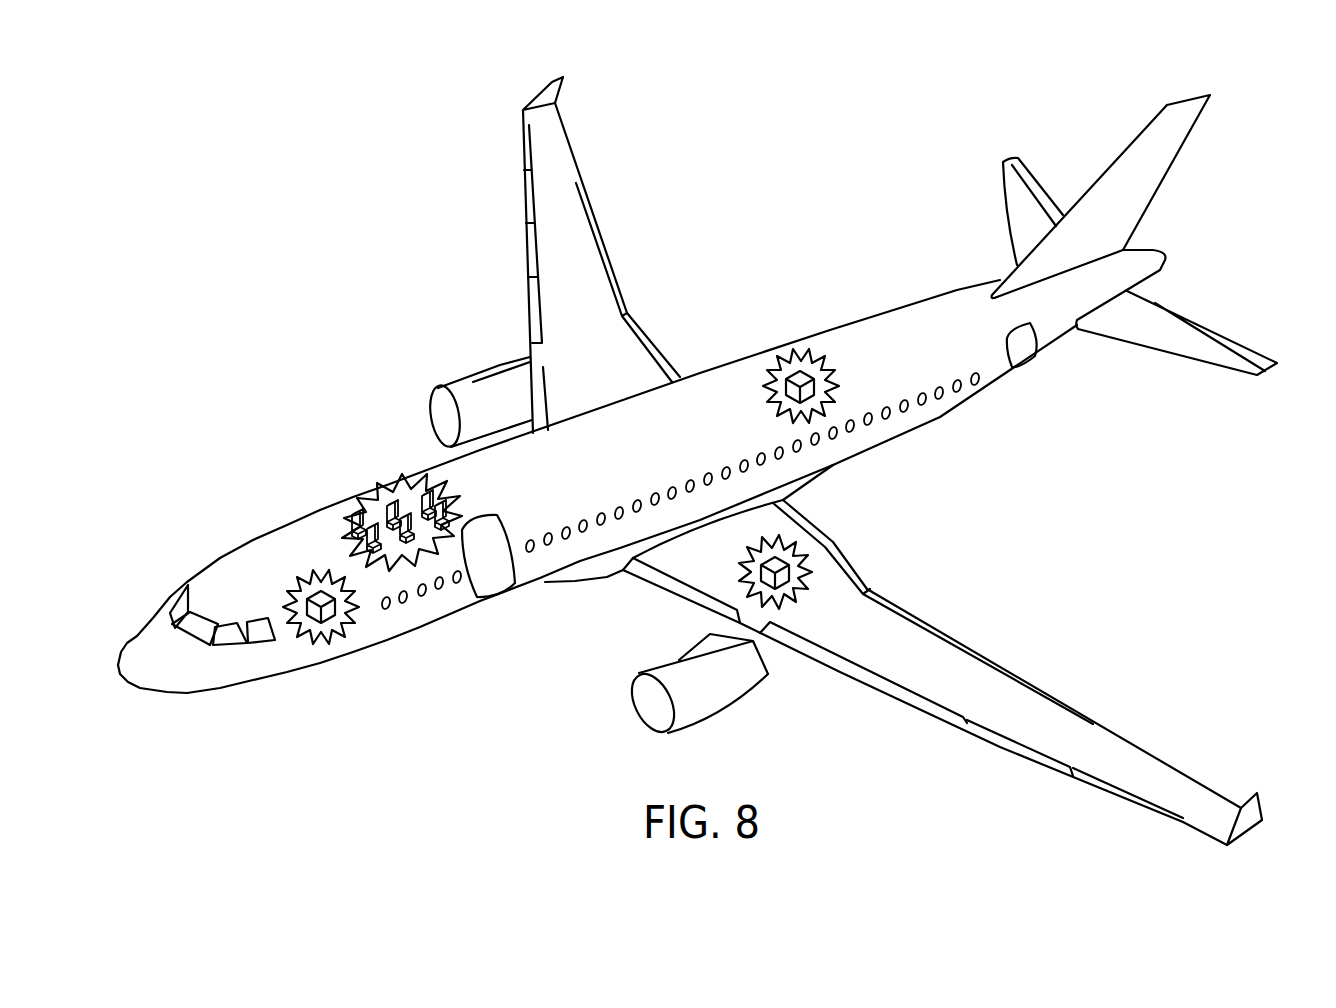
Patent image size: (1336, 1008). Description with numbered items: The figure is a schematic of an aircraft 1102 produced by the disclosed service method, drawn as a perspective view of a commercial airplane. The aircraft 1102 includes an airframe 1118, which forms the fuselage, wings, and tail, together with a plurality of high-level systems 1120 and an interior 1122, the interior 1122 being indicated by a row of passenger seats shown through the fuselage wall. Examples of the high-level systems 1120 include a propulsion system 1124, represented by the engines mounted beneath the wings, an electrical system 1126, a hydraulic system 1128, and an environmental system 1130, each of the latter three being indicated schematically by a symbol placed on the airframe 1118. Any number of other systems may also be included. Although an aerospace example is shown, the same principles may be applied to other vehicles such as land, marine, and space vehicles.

The aircraft 1102 is at (697, 461).
The airframe 1118 is at (642, 471).
The high-level systems 1120 is at (903, 655).
The interior 1122 is at (360, 515).
The propulsion system 1124 is at (453, 382).
The electrical system 1126 is at (320, 596).
The hydraulic system 1128 is at (785, 560).
The environmental system 1130 is at (796, 370).